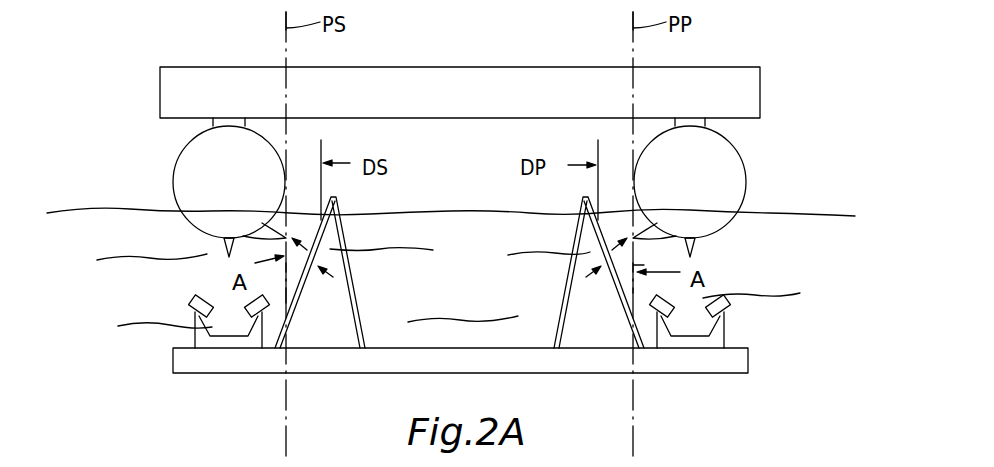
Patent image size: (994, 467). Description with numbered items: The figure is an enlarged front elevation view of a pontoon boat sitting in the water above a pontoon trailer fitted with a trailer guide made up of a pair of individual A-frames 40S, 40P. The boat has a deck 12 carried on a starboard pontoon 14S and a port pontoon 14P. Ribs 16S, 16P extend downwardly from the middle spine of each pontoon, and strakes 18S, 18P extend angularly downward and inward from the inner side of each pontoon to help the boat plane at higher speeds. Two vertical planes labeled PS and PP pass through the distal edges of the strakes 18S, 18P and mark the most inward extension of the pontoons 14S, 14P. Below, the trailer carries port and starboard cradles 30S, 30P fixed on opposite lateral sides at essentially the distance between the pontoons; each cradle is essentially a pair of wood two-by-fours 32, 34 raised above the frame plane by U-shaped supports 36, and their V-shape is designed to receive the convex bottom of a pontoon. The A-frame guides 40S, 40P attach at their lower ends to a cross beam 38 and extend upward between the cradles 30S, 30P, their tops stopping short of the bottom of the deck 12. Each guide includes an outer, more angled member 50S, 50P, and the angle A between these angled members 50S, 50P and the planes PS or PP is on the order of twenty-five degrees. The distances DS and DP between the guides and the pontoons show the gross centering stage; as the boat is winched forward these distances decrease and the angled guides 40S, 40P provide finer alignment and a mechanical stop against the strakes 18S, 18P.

The deck 12 is at (726, 62).
The starboard pontoon 14S is at (276, 163).
The port pontoon 14P is at (644, 163).
The starboard rib 16S is at (228, 258).
The port rib 16P is at (691, 258).
The starboard strake 18S is at (338, 233).
The port strake 18P is at (581, 233).
The starboard cradle 30S is at (218, 337).
The port cradle 30P is at (714, 343).
The wood 2×4 32 is at (199, 302).
The wood 2×4 34 is at (268, 303).
The U-shaped support 36 is at (185, 328).
The cross-member 38 is at (386, 365).
The starboard A-frame guide 40S is at (361, 278).
The port A-frame guide 40P is at (558, 278).
The starboard angled member 50S is at (207, 232).
The port angled member 50P is at (712, 232).